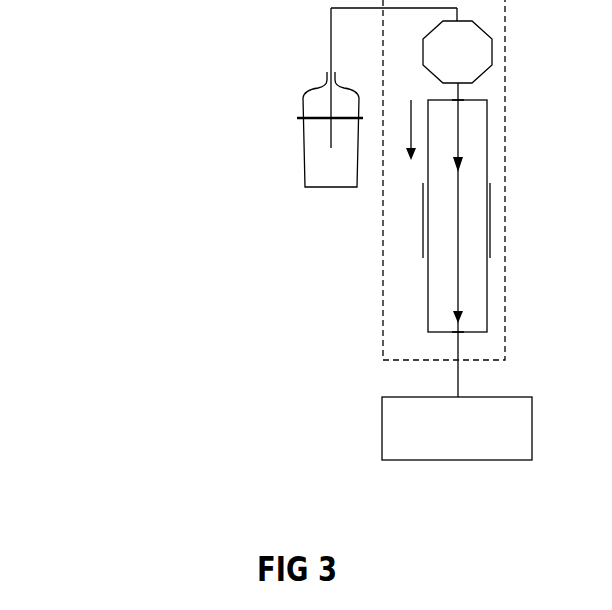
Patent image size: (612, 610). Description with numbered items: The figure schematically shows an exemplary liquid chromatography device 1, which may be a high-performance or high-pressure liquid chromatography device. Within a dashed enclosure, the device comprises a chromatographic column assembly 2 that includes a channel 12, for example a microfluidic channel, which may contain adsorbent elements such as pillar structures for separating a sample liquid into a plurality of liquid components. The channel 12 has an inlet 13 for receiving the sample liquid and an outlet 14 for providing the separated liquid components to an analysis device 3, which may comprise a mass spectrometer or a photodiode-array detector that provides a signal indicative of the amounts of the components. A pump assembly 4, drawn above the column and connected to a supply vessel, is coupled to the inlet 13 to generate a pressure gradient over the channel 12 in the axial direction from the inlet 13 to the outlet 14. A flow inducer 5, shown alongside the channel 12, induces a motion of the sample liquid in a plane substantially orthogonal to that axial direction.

The liquid chromatography device 1 is at (62, 176).
The chromatographic column assembly 2 is at (383, 297).
The analysis device 3 is at (382, 420).
The pump assembly 4 is at (490, 53).
The flow inducer 5 is at (490, 222).
The channel 12 is at (487, 158).
The inlet 13 is at (458, 100).
The outlet 14 is at (458, 332).